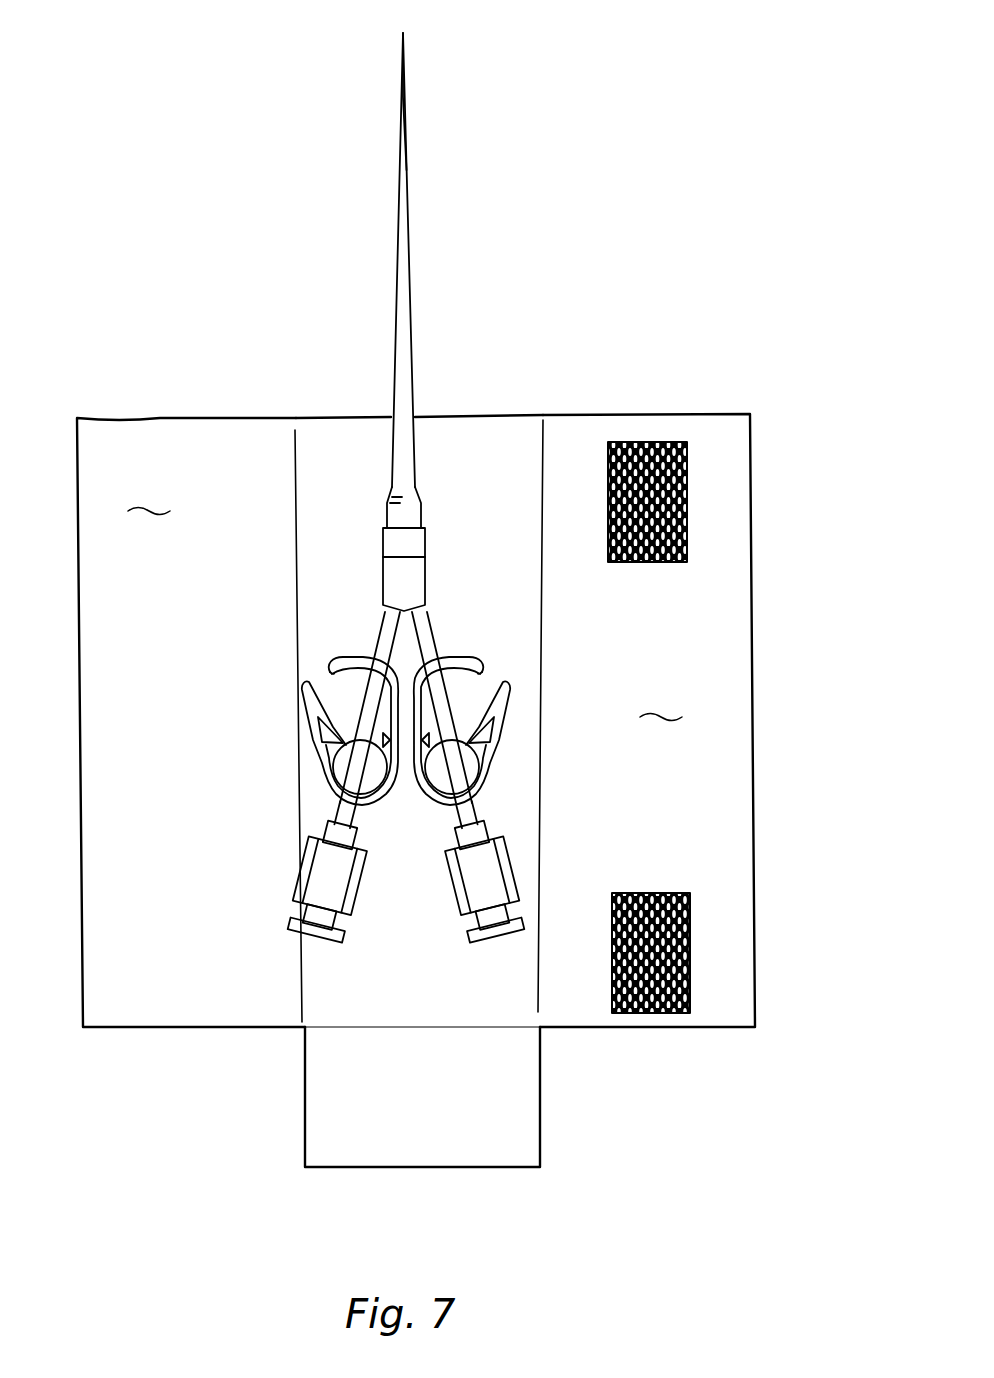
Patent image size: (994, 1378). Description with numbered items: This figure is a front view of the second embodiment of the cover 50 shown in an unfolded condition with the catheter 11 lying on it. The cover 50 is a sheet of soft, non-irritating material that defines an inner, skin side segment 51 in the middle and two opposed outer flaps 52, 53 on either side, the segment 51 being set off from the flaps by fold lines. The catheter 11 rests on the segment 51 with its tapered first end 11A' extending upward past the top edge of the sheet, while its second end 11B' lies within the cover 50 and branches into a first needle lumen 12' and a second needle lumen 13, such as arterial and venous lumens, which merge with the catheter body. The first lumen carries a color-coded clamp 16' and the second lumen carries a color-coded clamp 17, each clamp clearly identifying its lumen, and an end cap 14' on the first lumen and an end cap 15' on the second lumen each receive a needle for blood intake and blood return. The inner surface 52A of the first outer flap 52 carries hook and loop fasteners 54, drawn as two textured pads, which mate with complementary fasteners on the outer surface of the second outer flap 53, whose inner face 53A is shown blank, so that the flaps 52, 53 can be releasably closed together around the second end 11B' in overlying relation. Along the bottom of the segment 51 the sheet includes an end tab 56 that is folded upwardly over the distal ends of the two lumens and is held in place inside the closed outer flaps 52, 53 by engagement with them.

The catheter 11 is at (415, 397).
The catheter first end 11A' is at (480, 105).
The second end of the catheter 11B' is at (335, 552).
The needle lumen 12' is at (287, 740).
The needle lumen 13 is at (472, 805).
The end cap 14' is at (280, 885).
The end cap 15' is at (463, 887).
The clamp 16' is at (287, 731).
The clamp 17 is at (503, 683).
The cover 50 is at (652, 381).
The inner skin side segment 51 is at (357, 417).
The first outer flap 52 is at (703, 415).
The inner surface of the first outer flap 52A is at (660, 704).
The second outer flap 53 is at (137, 417).
The surface of the second outer flap 53A is at (149, 497).
The hook and loop fasteners 54 is at (687, 505).
The end tab 56 is at (527, 1120).